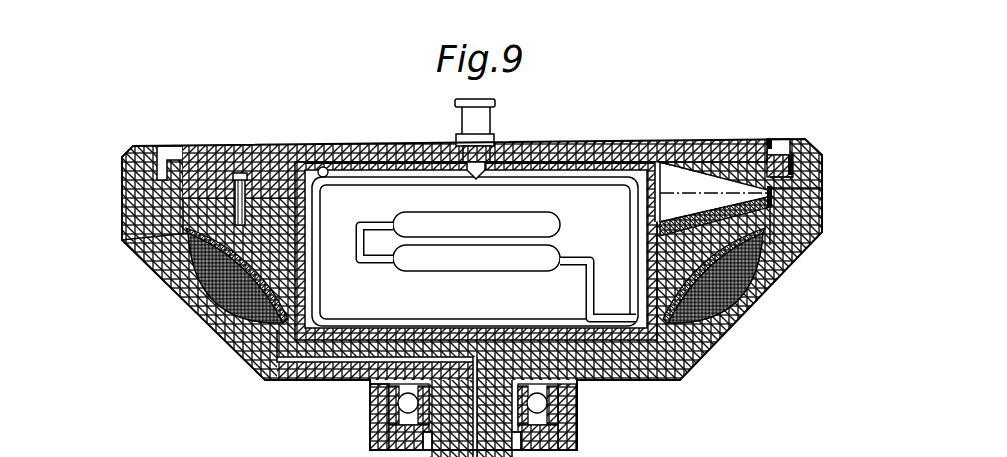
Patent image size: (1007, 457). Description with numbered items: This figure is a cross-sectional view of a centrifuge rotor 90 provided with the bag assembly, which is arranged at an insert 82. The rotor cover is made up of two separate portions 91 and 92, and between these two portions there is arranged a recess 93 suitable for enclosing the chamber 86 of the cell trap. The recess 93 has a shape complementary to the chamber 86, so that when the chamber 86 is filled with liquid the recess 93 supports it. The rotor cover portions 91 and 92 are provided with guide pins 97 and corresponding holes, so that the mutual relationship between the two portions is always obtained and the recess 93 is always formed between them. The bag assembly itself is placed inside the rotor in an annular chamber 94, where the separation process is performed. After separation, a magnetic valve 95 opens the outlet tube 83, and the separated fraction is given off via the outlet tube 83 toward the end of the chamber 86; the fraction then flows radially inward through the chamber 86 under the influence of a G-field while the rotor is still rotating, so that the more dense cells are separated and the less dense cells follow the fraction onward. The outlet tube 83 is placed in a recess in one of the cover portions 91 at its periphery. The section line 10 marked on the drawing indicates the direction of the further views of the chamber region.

The centrifuge rotor 90 is at (112, 135).
The rotor cover portion 91 is at (453, 298).
The rotor cover portion 92 is at (213, 160).
The guide pins 97 is at (262, 150).
The insert 82 is at (327, 166).
The outlet tube 83 is at (385, 178).
The magnetic valve 95 is at (462, 123).
The recess 93 is at (688, 182).
The chamber 86 is at (772, 209).
The section line 10 is at (672, 222).
The annular chamber 94 is at (763, 290).